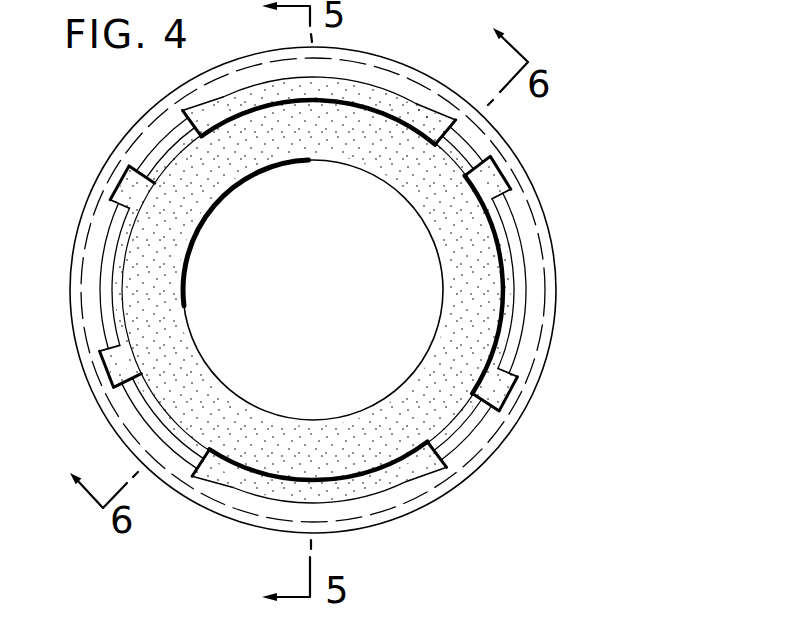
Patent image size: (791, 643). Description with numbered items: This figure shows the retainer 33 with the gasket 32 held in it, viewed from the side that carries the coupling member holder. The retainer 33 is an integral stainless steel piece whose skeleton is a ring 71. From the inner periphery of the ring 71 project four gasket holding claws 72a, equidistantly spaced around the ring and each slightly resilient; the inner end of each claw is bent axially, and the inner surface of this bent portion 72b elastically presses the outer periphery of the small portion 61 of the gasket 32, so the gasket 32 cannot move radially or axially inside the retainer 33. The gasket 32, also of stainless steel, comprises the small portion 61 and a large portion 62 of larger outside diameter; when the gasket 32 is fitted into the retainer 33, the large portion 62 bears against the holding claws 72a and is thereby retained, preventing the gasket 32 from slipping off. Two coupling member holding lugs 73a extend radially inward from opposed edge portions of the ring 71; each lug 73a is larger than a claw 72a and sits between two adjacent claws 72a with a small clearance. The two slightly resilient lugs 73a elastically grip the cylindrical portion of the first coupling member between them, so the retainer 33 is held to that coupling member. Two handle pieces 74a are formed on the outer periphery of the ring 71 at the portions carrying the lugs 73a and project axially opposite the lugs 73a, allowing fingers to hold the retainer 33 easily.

The ring 71 is at (552, 233).
The gasket holding claw 72a is at (460, 136).
The bent portion 72b is at (492, 205).
The coupling member holding lug 73a is at (520, 277).
The handle piece 74a is at (542, 366).
The retainer 33 is at (653, 340).
The gasket 32 is at (440, 396).
The small portion 61 is at (447, 408).
The large portion 62 is at (368, 487).